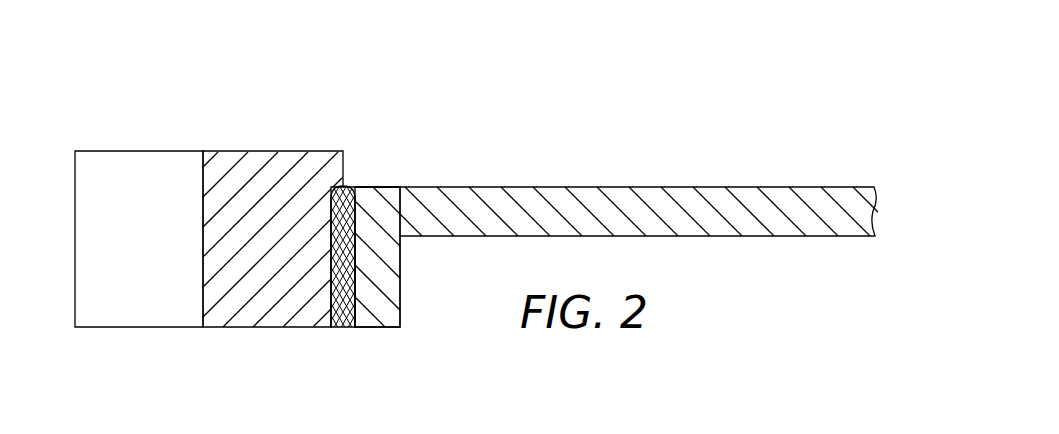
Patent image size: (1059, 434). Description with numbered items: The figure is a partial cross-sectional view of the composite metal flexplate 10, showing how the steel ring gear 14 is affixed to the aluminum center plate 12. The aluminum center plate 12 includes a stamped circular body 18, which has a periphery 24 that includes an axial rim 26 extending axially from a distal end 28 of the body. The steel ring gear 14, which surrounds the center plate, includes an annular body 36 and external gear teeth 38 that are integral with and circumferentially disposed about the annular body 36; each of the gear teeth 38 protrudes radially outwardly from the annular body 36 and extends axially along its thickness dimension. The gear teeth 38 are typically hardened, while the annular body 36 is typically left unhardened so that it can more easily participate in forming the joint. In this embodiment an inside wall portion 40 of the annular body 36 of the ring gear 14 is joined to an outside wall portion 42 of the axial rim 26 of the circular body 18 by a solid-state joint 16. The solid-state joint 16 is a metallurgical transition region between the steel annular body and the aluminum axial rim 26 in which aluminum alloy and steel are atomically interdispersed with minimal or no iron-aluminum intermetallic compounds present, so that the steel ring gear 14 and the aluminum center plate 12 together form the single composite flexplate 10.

The composite metal flexplate 10 is at (772, 100).
The aluminum center plate 12 is at (528, 159).
The steel ring gear 14 is at (141, 104).
The solid-state joint 16 is at (339, 307).
The circular body 18 is at (687, 212).
The periphery 24 is at (402, 162).
The axial rim 26 is at (375, 273).
The distal end 28 is at (372, 205).
The annular body 36 is at (268, 177).
The external gear teeth 38 is at (105, 175).
The inside wall portion 40 is at (325, 251).
The outside wall portion 42 is at (360, 284).